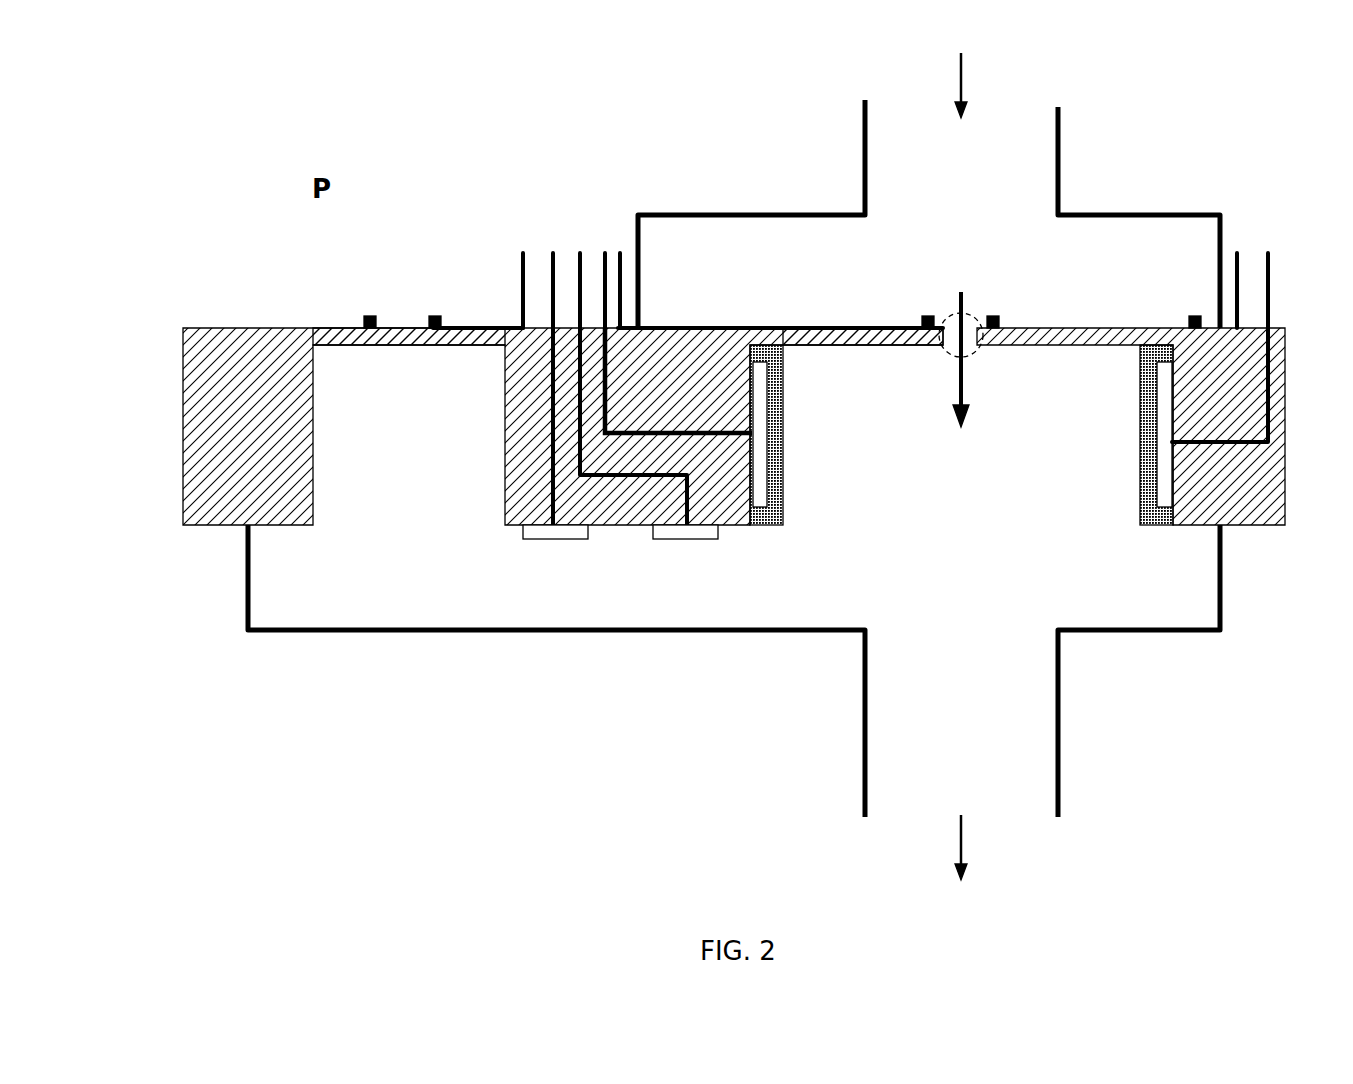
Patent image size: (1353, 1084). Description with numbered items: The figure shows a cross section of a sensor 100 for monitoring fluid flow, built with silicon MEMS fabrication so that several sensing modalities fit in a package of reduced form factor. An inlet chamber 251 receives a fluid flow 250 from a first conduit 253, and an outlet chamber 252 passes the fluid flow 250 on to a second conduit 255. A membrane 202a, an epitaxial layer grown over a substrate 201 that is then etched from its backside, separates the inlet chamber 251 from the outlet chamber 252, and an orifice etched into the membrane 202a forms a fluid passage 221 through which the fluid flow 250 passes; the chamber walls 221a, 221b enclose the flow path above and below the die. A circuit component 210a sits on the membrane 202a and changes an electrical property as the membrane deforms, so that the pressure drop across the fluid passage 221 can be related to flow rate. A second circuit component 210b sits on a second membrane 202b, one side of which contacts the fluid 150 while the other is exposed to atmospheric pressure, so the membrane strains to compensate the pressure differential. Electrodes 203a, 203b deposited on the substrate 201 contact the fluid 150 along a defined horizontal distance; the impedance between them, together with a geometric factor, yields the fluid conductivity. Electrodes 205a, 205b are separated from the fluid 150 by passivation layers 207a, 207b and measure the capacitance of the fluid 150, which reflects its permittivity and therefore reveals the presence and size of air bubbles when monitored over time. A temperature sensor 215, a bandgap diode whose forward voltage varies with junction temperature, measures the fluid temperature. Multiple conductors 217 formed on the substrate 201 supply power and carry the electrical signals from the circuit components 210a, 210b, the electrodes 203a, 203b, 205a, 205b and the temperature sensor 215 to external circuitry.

The sensor 100 is at (352, 108).
The fluid 150 is at (720, 276).
The substrate 201 is at (698, 403).
The membrane 202a is at (903, 348).
The second membrane 202b is at (445, 347).
The electrode 203a is at (523, 540).
The electrode 203b is at (690, 540).
The electrode 205a is at (783, 500).
The electrode 205b is at (1138, 503).
The passivation layer 207a is at (783, 425).
The passivation layer 207b is at (1140, 428).
The circuit component 210a is at (993, 316).
The second circuit component 210b is at (435, 316).
The temperature sensor 215 is at (1195, 316).
The conductors 217 is at (620, 253).
The fluid passage 221 is at (977, 358).
The upper chamber wall 221a is at (835, 213).
The lower chamber wall 221b is at (360, 632).
The fluid flow 250 is at (961, 432).
The inlet chamber 251 is at (987, 197).
The outlet chamber 252 is at (987, 786).
The first conduit 253 is at (961, 80).
The second conduit 255 is at (961, 845).